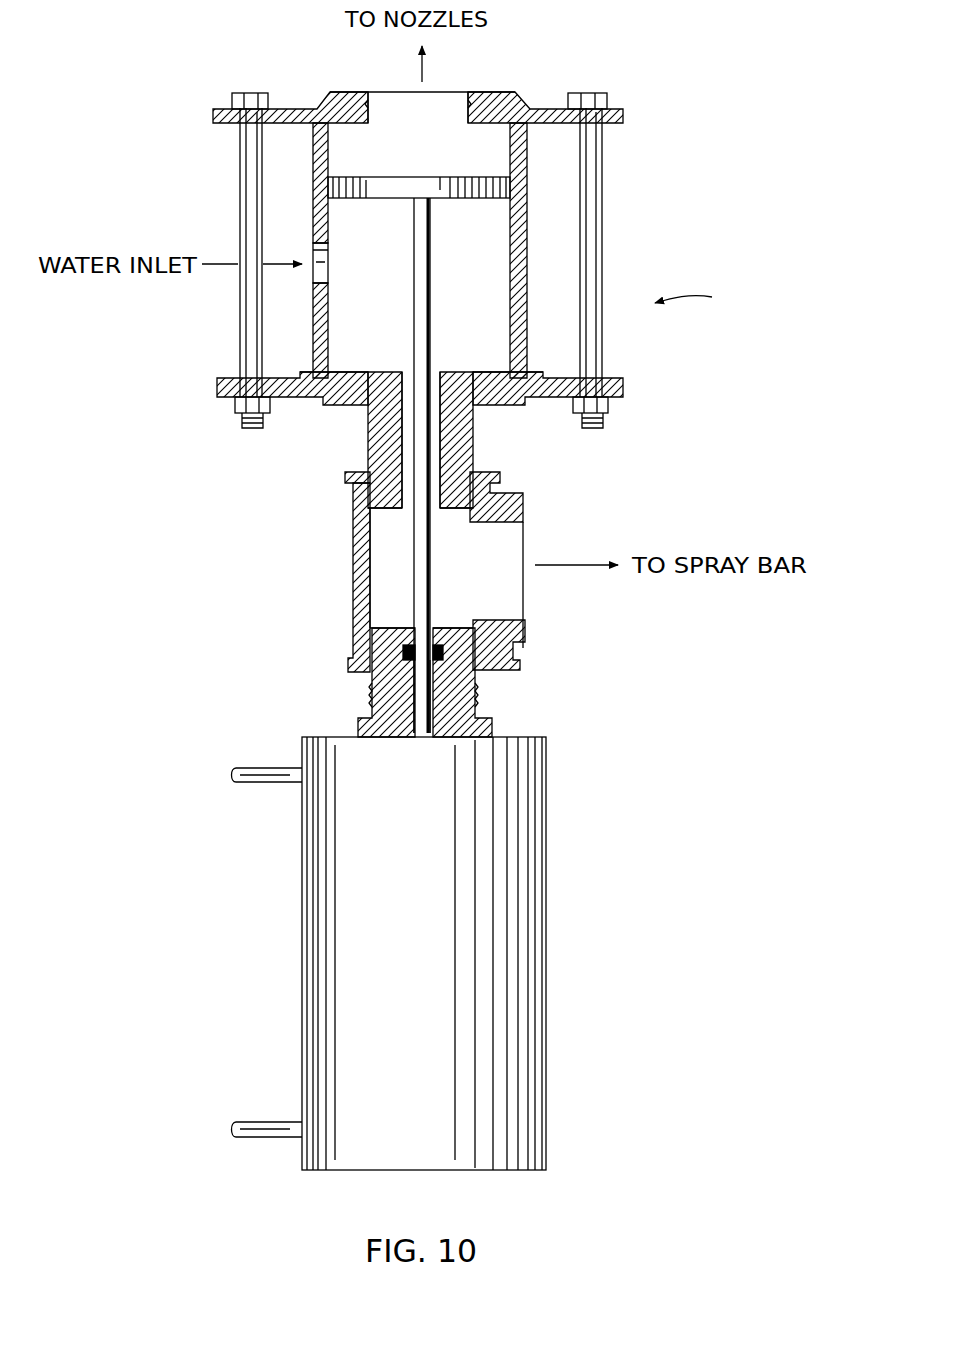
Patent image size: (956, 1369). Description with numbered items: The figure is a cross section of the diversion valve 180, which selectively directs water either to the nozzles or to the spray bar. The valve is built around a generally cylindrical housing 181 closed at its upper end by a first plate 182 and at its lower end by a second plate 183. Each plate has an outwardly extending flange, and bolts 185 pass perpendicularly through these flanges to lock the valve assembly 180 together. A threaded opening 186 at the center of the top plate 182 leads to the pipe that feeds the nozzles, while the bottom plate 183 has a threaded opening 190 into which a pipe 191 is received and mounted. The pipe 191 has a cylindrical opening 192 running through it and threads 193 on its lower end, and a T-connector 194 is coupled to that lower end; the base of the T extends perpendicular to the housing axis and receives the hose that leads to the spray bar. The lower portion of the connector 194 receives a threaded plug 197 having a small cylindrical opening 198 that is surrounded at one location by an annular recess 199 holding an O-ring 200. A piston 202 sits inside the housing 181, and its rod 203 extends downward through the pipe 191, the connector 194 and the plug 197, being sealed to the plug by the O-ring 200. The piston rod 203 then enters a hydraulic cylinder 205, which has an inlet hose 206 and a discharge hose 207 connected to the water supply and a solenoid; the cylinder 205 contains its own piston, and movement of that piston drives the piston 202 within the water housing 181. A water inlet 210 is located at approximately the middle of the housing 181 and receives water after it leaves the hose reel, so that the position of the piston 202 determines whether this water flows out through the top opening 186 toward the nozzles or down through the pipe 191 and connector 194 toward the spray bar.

The diversion valve 180 is at (703, 295).
The housing 181 is at (519, 226).
The first plate 182 is at (283, 108).
The second plate 183 is at (293, 400).
The bolts 185 is at (592, 258).
The threaded opening 186 is at (466, 107).
The threaded opening 190 is at (463, 386).
The pipe 191 is at (462, 435).
The cylindrical opening 192 is at (438, 372).
The threads 193 is at (493, 489).
The T-connector 194 is at (358, 577).
The threaded plug 197 is at (476, 697).
The cylindrical opening 198 is at (431, 683).
The annular recess 199 is at (405, 648).
The O-ring 200 is at (438, 645).
The piston 202 is at (418, 186).
The piston rod 203 is at (430, 273).
The hydraulic cylinder 205 is at (543, 1028).
The inlet hose 206 is at (258, 784).
The discharge hose 207 is at (262, 1139).
The water inlet 210 is at (326, 264).